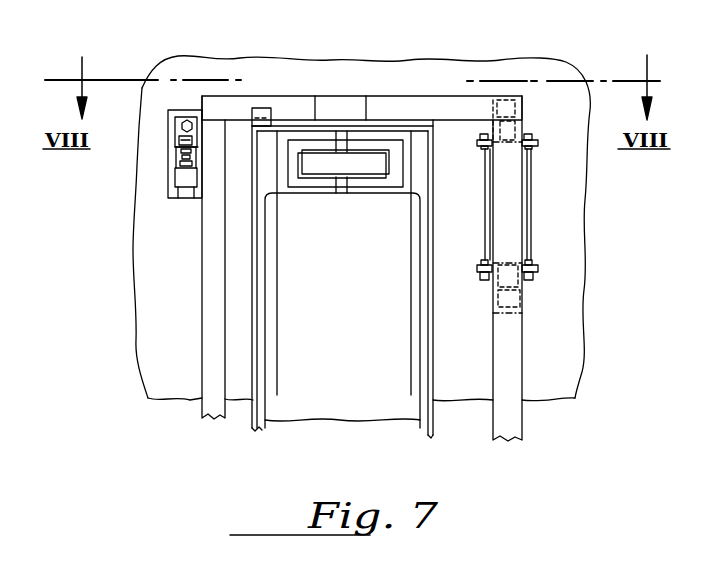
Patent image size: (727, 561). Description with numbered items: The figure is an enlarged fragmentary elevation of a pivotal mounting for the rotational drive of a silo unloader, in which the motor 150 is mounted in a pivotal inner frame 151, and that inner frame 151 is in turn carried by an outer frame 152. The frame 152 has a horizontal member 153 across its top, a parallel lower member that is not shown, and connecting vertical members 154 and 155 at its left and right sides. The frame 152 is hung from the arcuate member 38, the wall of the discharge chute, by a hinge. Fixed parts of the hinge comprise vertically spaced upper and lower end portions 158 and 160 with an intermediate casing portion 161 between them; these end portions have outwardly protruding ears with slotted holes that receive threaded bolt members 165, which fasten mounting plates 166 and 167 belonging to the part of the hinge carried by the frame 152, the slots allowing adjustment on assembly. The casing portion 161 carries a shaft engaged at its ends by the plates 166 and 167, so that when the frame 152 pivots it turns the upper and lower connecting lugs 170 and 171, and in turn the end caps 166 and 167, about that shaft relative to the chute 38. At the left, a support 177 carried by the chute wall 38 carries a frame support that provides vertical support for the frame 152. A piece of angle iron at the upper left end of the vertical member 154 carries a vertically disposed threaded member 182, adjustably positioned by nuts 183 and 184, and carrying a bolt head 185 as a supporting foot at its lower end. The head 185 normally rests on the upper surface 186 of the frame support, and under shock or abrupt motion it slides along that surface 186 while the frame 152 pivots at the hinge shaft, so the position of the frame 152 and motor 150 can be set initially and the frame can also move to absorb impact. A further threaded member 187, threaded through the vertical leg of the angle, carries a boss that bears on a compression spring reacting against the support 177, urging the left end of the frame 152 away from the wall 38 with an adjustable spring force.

The arcuate member 38 is at (155, 342).
The motor 150 is at (337, 398).
The pivotal inner frame 151 is at (244, 433).
The outer frame 152 is at (428, 96).
The horizontal member 153 is at (378, 105).
The vertical member 154 is at (222, 413).
The vertical member 155 is at (520, 368).
The upper end portion 158 is at (536, 152).
The lower end portion 160 is at (539, 268).
The intermediate casing portion 161 is at (531, 213).
The threaded bolt members 165 is at (528, 133).
The mounting plate 166 is at (538, 139).
The mounting plate 167 is at (539, 276).
The upper connecting lug 170 is at (488, 100).
The lower connecting lug 171 is at (505, 300).
The support 177 is at (193, 198).
The threaded member 182 is at (178, 167).
The nut 183 is at (177, 148).
The nut 184 is at (179, 152).
The bolt head 185 is at (179, 162).
The upper surface 186 is at (185, 193).
The threaded member 187 is at (178, 120).